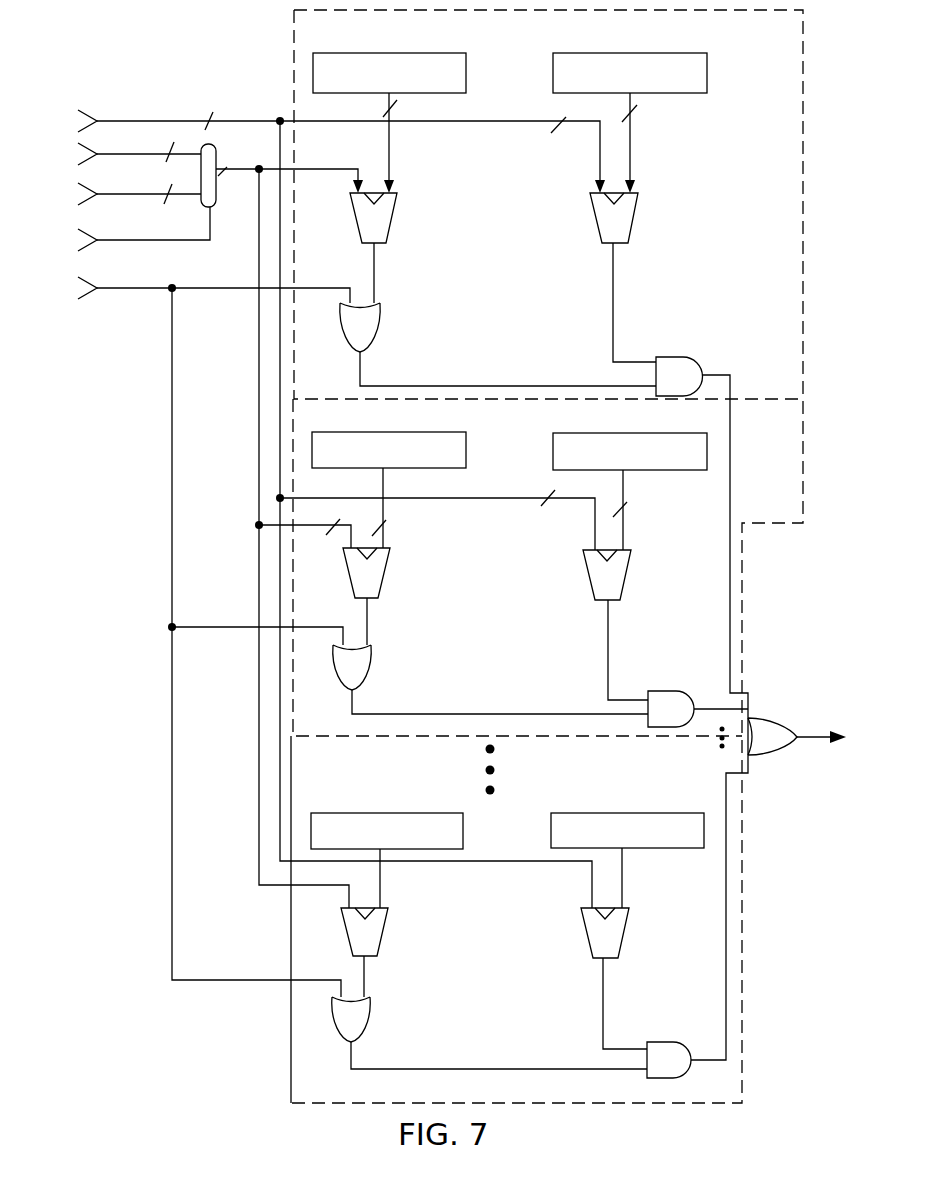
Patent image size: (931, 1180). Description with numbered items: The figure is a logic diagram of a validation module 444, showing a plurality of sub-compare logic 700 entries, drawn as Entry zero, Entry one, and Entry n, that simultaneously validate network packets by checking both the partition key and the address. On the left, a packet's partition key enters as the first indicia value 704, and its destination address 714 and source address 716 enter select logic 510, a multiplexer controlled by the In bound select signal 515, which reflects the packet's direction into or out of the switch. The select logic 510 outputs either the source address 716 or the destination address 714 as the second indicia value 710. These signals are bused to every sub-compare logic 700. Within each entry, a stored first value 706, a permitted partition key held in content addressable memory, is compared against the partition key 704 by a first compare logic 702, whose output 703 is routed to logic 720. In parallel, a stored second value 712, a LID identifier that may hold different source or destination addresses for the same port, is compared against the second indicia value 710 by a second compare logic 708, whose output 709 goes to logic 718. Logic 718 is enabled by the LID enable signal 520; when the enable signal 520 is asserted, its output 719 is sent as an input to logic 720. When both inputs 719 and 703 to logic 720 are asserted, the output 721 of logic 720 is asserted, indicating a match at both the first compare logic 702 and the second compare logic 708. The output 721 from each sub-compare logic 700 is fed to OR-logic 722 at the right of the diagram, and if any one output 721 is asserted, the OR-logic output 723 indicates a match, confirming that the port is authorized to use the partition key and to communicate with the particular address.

The first indicia value 704 is at (97, 121).
The select logic 510 is at (212, 144).
The destination address 714 is at (108, 156).
The source address 716 is at (108, 196).
The select signal 515 is at (108, 242).
The enable signal 520 is at (108, 290).
The second indicia value 710 is at (289, 526).
The second value 712 is at (449, 87).
The first value 706 is at (692, 87).
The sub-compare logic 700 is at (782, 68).
The second compare logic 708 is at (397, 202).
The first compare logic 702 is at (638, 202).
The output of second compare logic 709 is at (374, 258).
The output of first compare logic 703 is at (613, 263).
The logic 718 is at (380, 318).
The output of logic 718 719 is at (475, 386).
The logic 720 is at (668, 357).
The output of logic 720 721 is at (730, 452).
The OR-logic 722 is at (770, 718).
The OR-logic output 723 is at (812, 738).
The validation module 444 is at (100, 790).